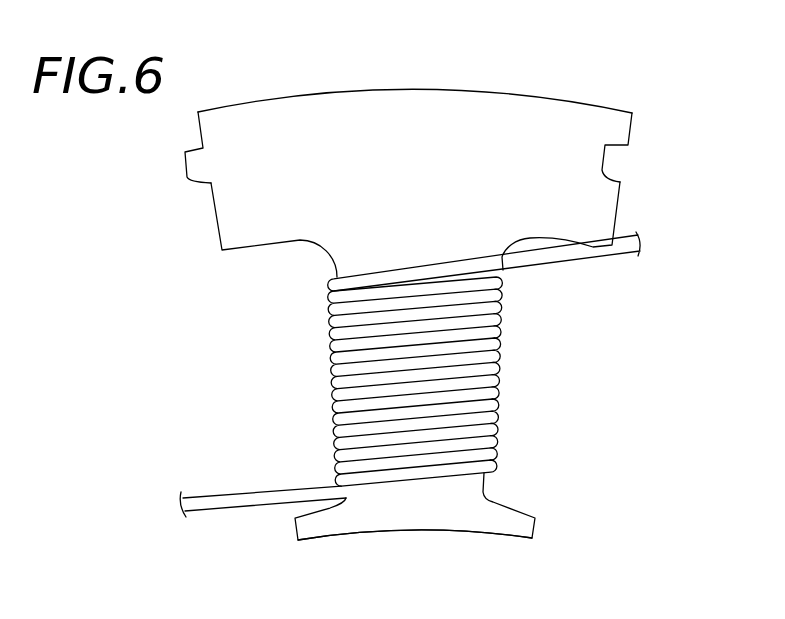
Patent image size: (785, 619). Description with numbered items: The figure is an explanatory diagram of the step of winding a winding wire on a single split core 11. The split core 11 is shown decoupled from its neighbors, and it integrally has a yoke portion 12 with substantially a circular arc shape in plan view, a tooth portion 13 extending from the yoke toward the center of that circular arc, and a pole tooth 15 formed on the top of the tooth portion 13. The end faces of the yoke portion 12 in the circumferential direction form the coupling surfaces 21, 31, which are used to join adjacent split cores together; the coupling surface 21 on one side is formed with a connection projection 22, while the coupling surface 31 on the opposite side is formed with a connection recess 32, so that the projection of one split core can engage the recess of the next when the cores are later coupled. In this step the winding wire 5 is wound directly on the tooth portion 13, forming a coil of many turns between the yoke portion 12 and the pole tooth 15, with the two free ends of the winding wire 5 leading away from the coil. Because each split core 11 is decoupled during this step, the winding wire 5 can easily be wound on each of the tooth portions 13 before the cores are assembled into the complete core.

The split core 11 is at (415, 320).
The yoke portion 12 is at (320, 108).
The coupling surface 21 is at (212, 209).
The connection projection 22 is at (185, 162).
The coupling surface 31 is at (622, 192).
The connection recess 32 is at (608, 155).
The winding wire 5 is at (251, 493).
The tooth portion 13 is at (473, 493).
The pole tooth 15 is at (413, 523).